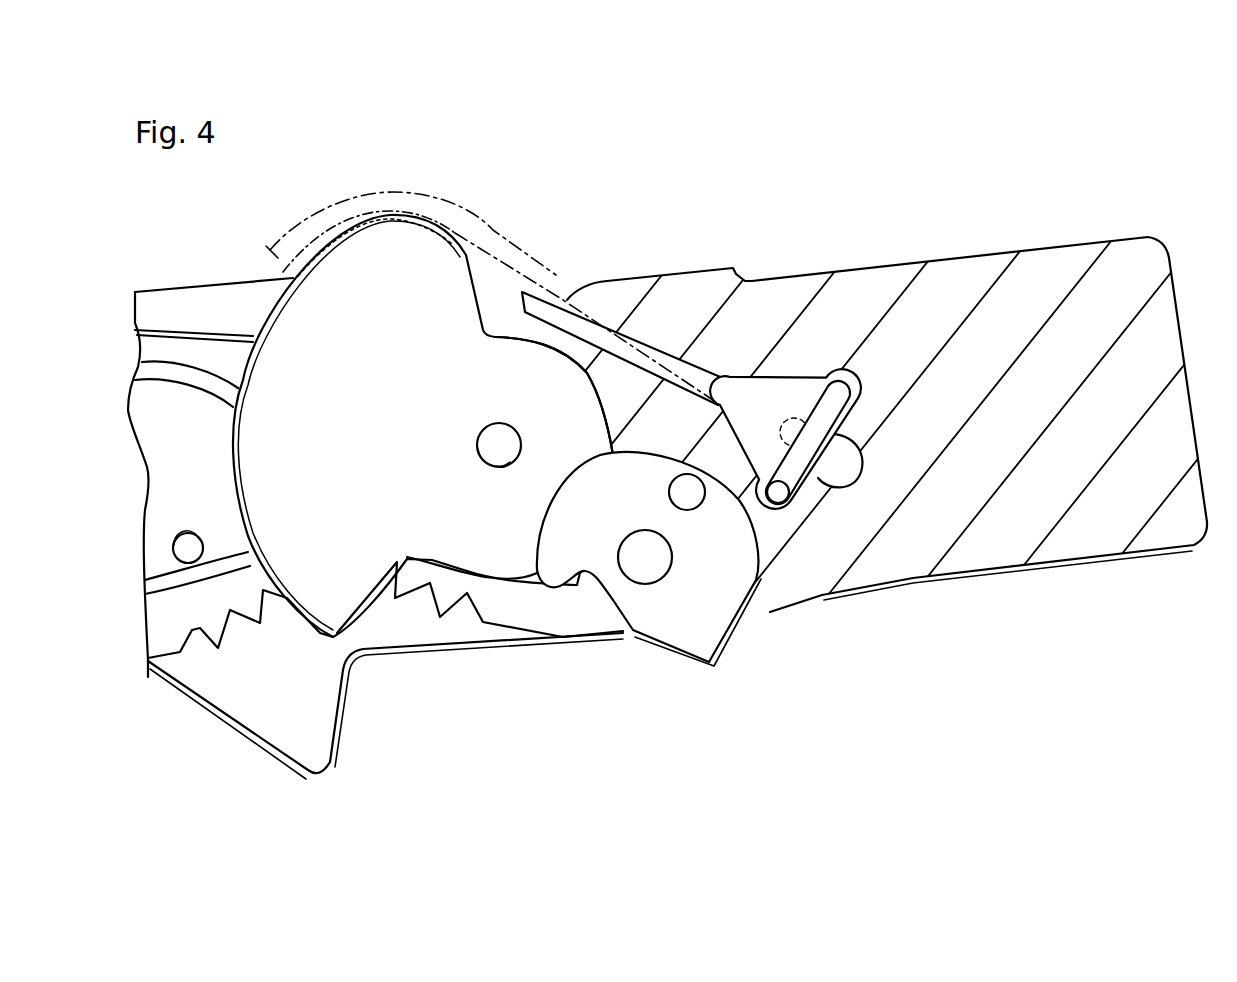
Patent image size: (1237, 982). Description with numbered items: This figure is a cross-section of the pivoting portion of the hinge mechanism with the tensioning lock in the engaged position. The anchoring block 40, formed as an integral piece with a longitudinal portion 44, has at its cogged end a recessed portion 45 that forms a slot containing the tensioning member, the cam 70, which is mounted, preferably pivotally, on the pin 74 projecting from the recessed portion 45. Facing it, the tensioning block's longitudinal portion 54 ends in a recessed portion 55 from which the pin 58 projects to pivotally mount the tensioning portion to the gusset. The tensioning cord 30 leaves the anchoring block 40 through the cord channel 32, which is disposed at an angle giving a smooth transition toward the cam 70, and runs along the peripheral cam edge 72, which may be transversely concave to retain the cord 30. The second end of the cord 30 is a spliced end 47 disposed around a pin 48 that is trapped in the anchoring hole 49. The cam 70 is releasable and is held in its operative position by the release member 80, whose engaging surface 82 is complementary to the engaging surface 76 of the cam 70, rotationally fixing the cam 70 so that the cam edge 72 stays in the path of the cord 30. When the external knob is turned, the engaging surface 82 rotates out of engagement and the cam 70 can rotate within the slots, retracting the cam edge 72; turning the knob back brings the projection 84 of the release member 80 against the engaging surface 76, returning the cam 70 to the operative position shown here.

The tensioning cord 30 is at (433, 205).
The cord channel 32 is at (650, 322).
The anchoring block 40 is at (878, 262).
The longitudinal portion 44 is at (976, 472).
The recessed portion 45 is at (534, 622).
The spliced end 47 is at (787, 428).
The pin 48 is at (838, 394).
The anchoring hole 49 is at (847, 476).
The longitudinal portion 54 is at (190, 345).
The recessed portion 55 is at (164, 629).
The pin 58 is at (190, 555).
The cam 70 is at (448, 288).
The peripheral cam edge 72 is at (357, 232).
The pin 74 is at (477, 444).
The engaging surface 76 is at (545, 505).
The release member 80 is at (718, 610).
The engaging surface 82 is at (606, 442).
The projection 84 is at (520, 592).